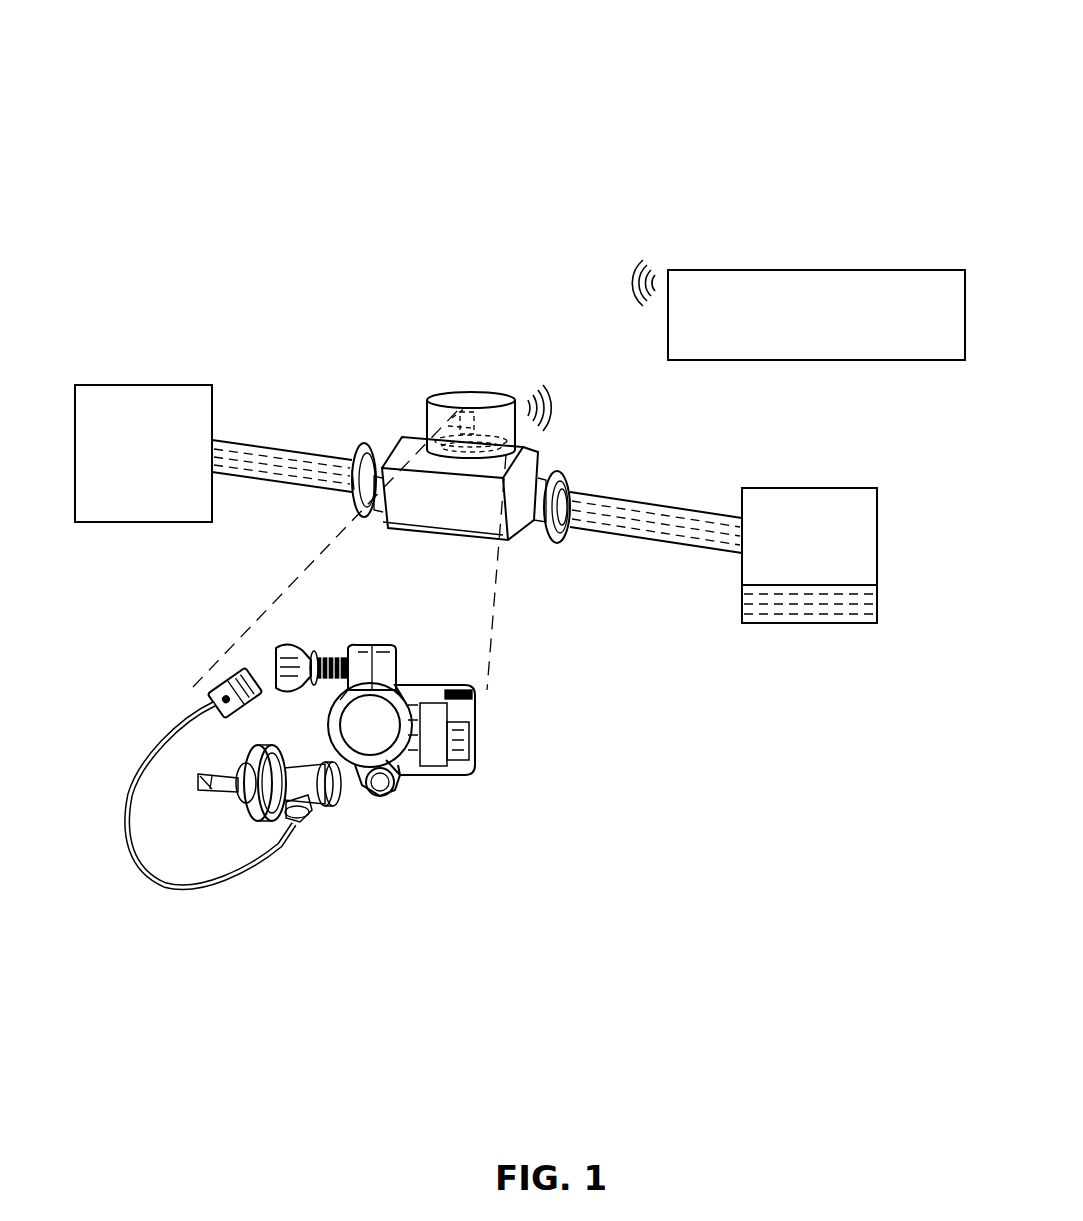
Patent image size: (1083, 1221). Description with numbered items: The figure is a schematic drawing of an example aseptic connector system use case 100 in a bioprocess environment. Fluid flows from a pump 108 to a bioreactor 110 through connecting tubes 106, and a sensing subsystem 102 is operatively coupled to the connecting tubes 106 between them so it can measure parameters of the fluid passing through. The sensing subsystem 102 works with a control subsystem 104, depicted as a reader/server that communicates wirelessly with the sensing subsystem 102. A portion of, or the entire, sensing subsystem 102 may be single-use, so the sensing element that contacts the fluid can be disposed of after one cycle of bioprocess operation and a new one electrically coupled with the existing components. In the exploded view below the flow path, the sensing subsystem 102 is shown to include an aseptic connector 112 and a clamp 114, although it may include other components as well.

The aseptic connector system use case 100 is at (898, 60).
The sensing subsystem 102 is at (493, 364).
The control subsystem 104 is at (832, 270).
The connecting tubes 106 is at (288, 452).
The pump 108 is at (147, 385).
The bioreactor 110 is at (878, 540).
The aseptic connector 112 is at (329, 822).
The clamp 114 is at (379, 626).